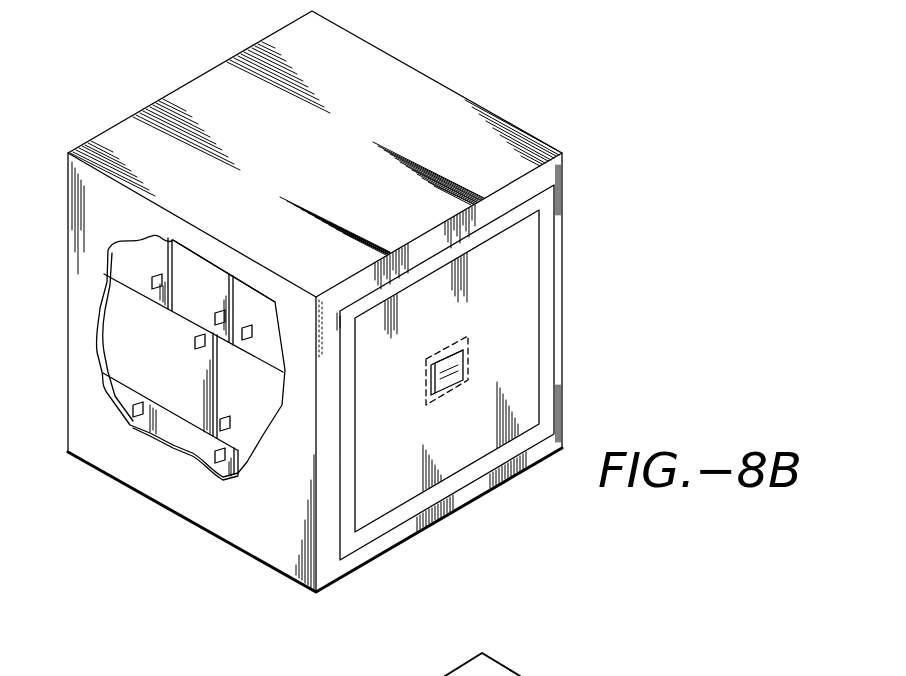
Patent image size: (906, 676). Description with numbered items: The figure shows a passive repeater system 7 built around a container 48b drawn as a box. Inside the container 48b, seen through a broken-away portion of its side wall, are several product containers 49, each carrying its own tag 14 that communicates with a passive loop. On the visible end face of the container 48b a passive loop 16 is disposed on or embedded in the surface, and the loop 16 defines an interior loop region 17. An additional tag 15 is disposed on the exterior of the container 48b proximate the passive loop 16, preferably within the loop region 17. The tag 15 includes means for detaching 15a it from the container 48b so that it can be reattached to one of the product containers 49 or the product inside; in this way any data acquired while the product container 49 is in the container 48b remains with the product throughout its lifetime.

The passive repeater system 7 is at (515, 53).
The tag 14 is at (150, 278).
The tag 15 is at (449, 358).
The means for detaching the tag 15a is at (468, 349).
The passive loop 16 is at (545, 252).
The loop region 17 is at (502, 303).
The container 48b is at (68, 408).
The product container 49 is at (205, 298).